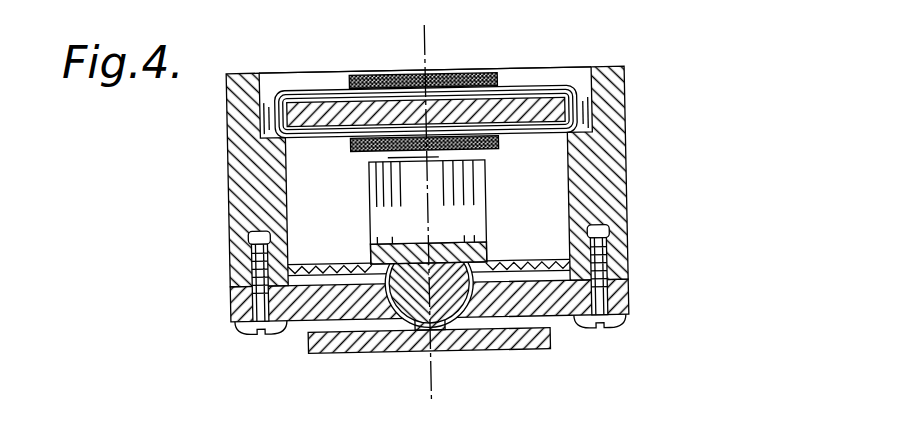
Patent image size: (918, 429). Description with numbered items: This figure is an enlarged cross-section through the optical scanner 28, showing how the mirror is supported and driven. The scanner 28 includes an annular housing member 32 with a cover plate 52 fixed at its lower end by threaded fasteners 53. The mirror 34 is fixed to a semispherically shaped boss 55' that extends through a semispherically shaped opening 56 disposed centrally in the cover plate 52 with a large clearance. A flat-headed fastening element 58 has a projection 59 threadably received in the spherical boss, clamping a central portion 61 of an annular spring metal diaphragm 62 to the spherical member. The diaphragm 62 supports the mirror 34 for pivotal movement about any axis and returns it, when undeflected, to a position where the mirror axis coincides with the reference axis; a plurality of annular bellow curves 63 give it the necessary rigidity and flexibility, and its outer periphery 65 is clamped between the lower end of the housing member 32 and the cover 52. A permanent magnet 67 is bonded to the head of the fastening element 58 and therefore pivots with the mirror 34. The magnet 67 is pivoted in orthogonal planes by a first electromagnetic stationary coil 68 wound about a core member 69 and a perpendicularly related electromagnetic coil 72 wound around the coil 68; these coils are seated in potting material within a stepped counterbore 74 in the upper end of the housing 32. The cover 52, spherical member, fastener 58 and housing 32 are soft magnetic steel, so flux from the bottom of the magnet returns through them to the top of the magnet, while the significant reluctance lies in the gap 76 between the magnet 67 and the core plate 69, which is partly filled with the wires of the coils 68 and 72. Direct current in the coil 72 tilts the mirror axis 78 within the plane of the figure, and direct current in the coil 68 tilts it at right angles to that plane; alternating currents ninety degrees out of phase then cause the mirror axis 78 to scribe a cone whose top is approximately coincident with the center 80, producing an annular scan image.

The scanner 28 is at (686, 143).
The housing member 32 is at (614, 108).
The mirror 34 is at (324, 348).
The cover plate 52 is at (565, 325).
The threaded fasteners 53 is at (609, 258).
The spring washer 55' is at (527, 238).
The semispherically shaped opening 56 is at (466, 306).
The flat-headed fastening element 58 is at (367, 259).
The projection 59 is at (428, 310).
The central portion 61 is at (405, 267).
The annular spring metal diaphragm 62 is at (315, 250).
The annular bellow curves 63 is at (329, 270).
The outer periphery 65 is at (247, 258).
The permanent magnet 67 is at (467, 176).
The first electromagnetic stationary coil 68 is at (528, 99).
The core member 69 is at (545, 112).
The electromagnetic coil 72 is at (473, 79).
The stepped counterbore 74 is at (268, 97).
The gap 76 is at (389, 157).
The mirror axis 78 is at (433, 374).
The center 80 is at (447, 262).